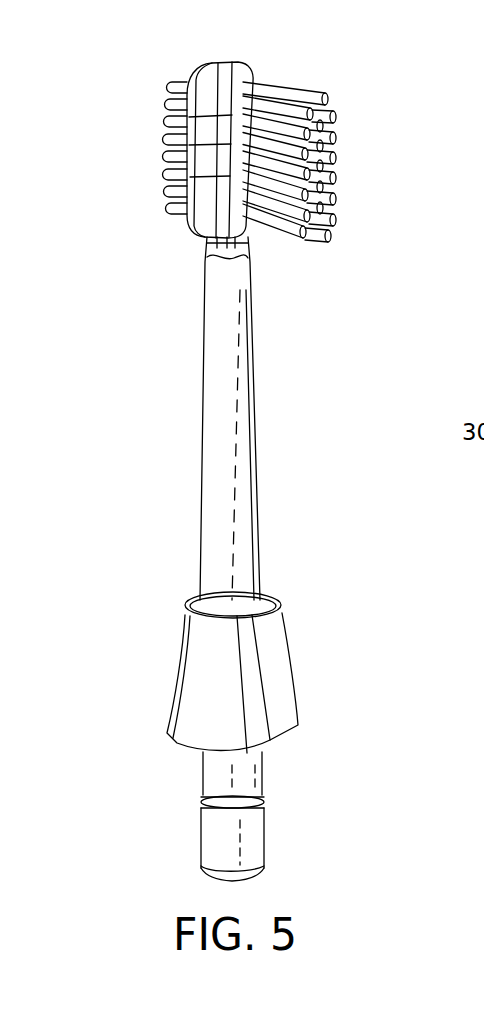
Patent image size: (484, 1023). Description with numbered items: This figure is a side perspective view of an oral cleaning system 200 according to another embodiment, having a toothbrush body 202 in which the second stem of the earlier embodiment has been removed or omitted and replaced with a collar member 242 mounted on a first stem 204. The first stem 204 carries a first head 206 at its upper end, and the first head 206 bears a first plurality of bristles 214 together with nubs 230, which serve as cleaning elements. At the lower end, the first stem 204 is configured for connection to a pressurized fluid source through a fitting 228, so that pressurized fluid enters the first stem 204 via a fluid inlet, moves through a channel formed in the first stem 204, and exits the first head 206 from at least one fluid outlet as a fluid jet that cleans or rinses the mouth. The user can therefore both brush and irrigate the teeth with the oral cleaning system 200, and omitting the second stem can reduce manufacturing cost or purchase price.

The oral cleaning system 200 is at (140, 274).
The toothbrush body 202 is at (275, 394).
The first stem 204 is at (215, 408).
The first head 206 is at (210, 92).
The first plurality of bristles 214 is at (350, 167).
The fitting 228 is at (203, 792).
The nubs 230 is at (140, 153).
The collar member 242 is at (212, 663).